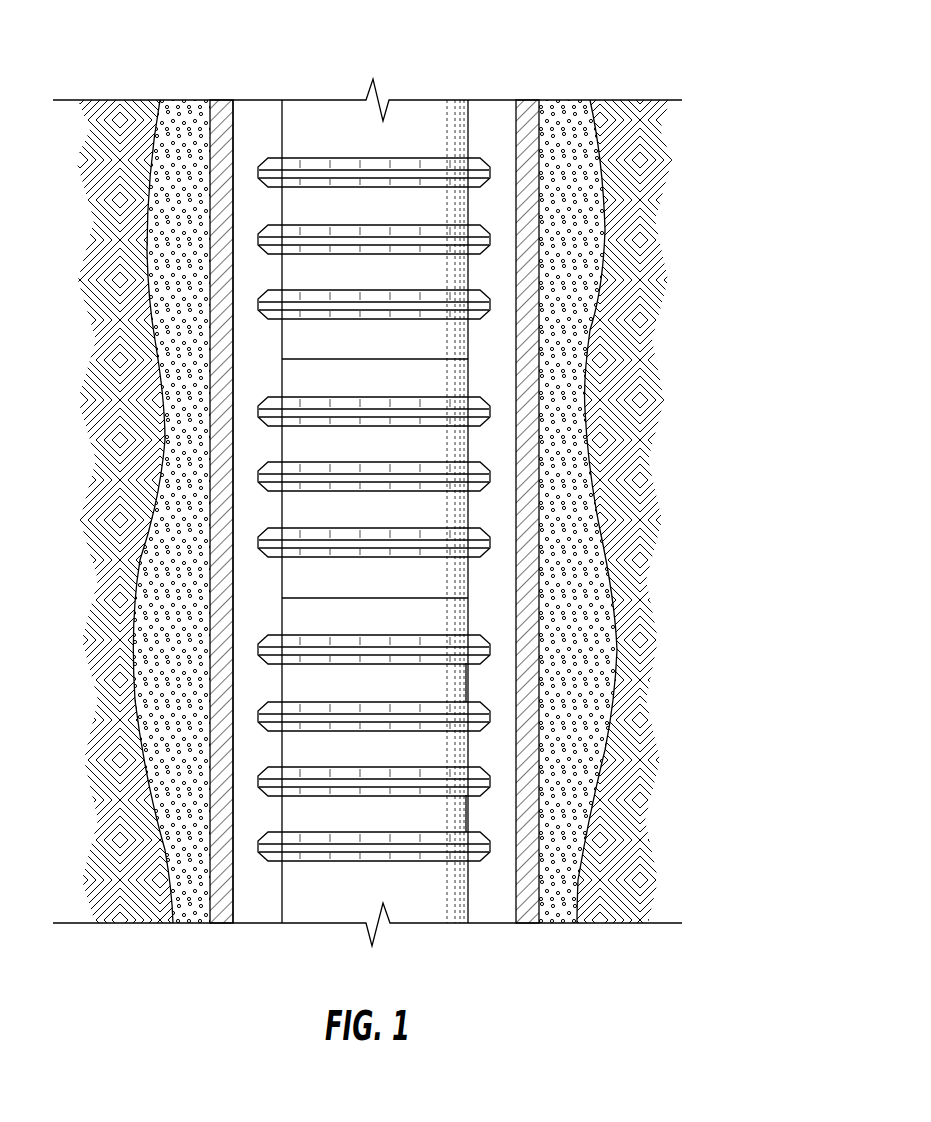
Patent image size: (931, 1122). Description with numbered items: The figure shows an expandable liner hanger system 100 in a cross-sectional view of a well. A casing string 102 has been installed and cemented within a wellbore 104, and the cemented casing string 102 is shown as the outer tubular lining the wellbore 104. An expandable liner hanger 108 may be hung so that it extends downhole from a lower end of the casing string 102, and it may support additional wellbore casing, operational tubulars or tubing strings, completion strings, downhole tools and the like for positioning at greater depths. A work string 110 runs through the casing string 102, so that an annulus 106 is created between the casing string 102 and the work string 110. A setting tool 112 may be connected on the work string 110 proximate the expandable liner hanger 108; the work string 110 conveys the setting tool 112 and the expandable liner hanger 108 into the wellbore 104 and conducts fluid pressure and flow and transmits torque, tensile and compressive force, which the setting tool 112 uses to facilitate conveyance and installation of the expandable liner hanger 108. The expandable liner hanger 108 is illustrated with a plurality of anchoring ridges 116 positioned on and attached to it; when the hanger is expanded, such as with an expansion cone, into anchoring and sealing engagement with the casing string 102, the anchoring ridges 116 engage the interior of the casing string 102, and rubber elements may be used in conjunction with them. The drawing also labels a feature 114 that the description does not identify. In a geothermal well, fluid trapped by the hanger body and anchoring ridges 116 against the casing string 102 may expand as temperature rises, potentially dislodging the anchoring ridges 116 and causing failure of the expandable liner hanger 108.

The expandable liner hanger system 100 is at (663, 58).
The casing string 102 is at (210, 319).
The wellbore 104 is at (157, 375).
The annulus 106 is at (258, 576).
The expandable liner hanger 108 is at (483, 615).
The work string 110 is at (483, 268).
The setting tool 112 is at (483, 438).
The tubing segments between fins 114 is at (483, 816).
The anchoring ridges 116 is at (258, 648).